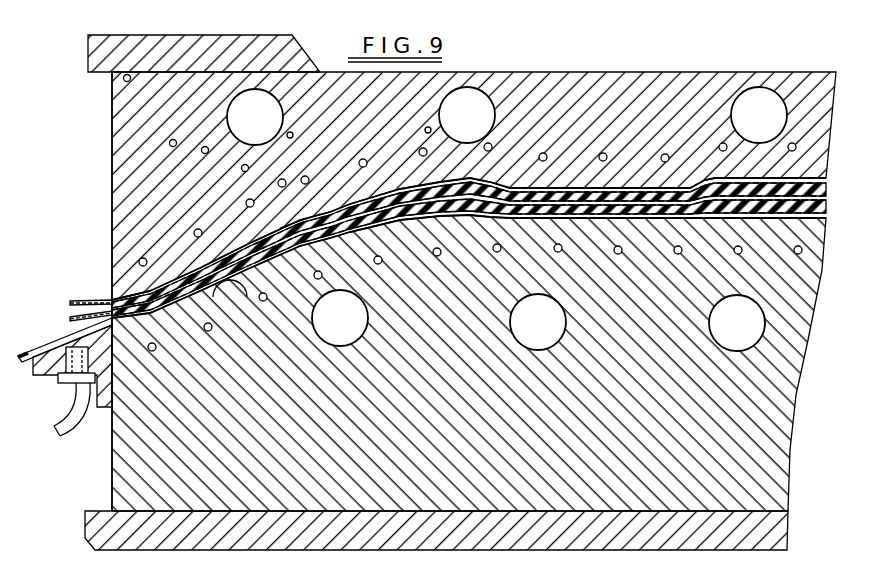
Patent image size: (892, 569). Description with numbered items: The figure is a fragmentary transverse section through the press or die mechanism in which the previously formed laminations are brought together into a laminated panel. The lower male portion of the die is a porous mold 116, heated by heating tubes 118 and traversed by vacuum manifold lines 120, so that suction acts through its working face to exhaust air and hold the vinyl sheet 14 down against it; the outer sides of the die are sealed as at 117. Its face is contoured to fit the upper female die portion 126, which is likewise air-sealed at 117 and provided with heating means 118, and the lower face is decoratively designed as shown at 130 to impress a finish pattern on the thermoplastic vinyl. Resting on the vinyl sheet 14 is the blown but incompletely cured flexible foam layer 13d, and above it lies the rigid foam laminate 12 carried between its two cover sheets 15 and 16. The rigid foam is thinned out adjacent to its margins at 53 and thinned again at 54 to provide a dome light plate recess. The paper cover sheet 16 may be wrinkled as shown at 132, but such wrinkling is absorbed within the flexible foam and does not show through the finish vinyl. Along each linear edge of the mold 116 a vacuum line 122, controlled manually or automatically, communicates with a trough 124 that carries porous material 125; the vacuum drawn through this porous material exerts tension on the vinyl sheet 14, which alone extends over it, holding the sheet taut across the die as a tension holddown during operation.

The rigid foam laminate 12 is at (215, 262).
The blown but incompletely cured flexible foam layer 13d is at (483, 215).
The vinyl sheet 14 is at (22, 357).
The cover sheet 15 is at (70, 303).
The paper cover sheet 16 is at (826, 203).
The thinned margin of foam lamination 53 is at (110, 298).
The dome light plate recess 54 is at (590, 187).
The lower male die portion 116 is at (127, 465).
The air seal 117 is at (112, 163).
The heating tubes 118 is at (198, 232).
The vacuum manifold lines 120 is at (265, 117).
The vacuum line 122 is at (72, 398).
The trough 124 is at (58, 380).
The porous material 125 is at (75, 435).
The upper female die portion 126 is at (130, 188).
The decorative design 130 is at (133, 298).
The wrinkle 132 is at (300, 214).